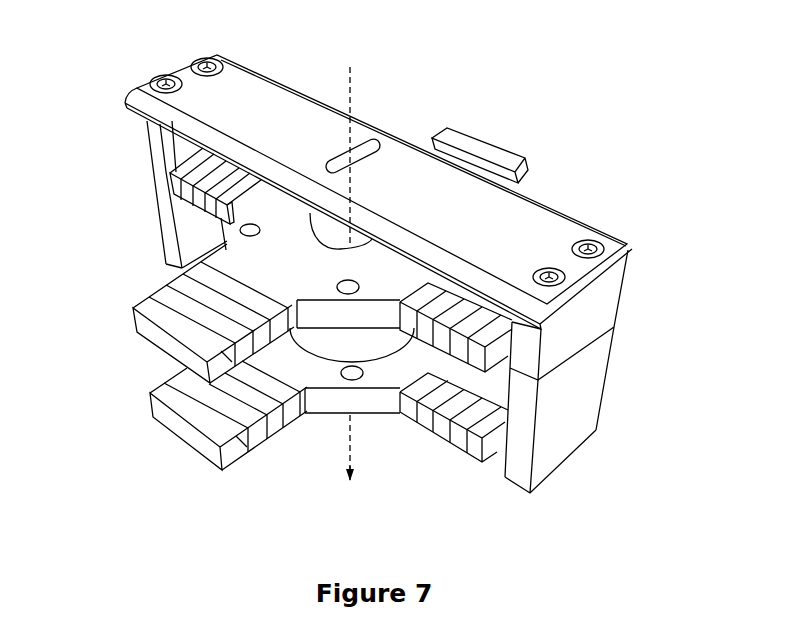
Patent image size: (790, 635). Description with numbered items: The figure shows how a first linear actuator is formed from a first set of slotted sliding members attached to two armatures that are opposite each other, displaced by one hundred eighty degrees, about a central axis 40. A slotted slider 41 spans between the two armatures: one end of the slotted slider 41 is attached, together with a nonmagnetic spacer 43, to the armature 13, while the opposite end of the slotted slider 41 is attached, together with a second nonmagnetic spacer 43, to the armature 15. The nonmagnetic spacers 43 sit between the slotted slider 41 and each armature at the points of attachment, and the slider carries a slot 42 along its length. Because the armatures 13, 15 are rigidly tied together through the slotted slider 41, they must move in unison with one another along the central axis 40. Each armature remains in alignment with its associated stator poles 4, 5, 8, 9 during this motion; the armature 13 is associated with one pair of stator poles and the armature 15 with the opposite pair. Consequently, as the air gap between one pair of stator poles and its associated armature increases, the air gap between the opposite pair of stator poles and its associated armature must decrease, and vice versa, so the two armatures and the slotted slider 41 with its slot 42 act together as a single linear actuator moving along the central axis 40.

The stator pole 4 is at (496, 357).
The stator pole 5 is at (492, 456).
The stator pole 8 is at (170, 184).
The stator pole 9 is at (199, 250).
The armature 13 is at (583, 418).
The armature 15 is at (161, 233).
The axis of displacement 40 is at (364, 57).
The slotted slider 41 is at (276, 106).
The slot 42 is at (375, 147).
The nonmagnetic spacer 43 is at (150, 134).